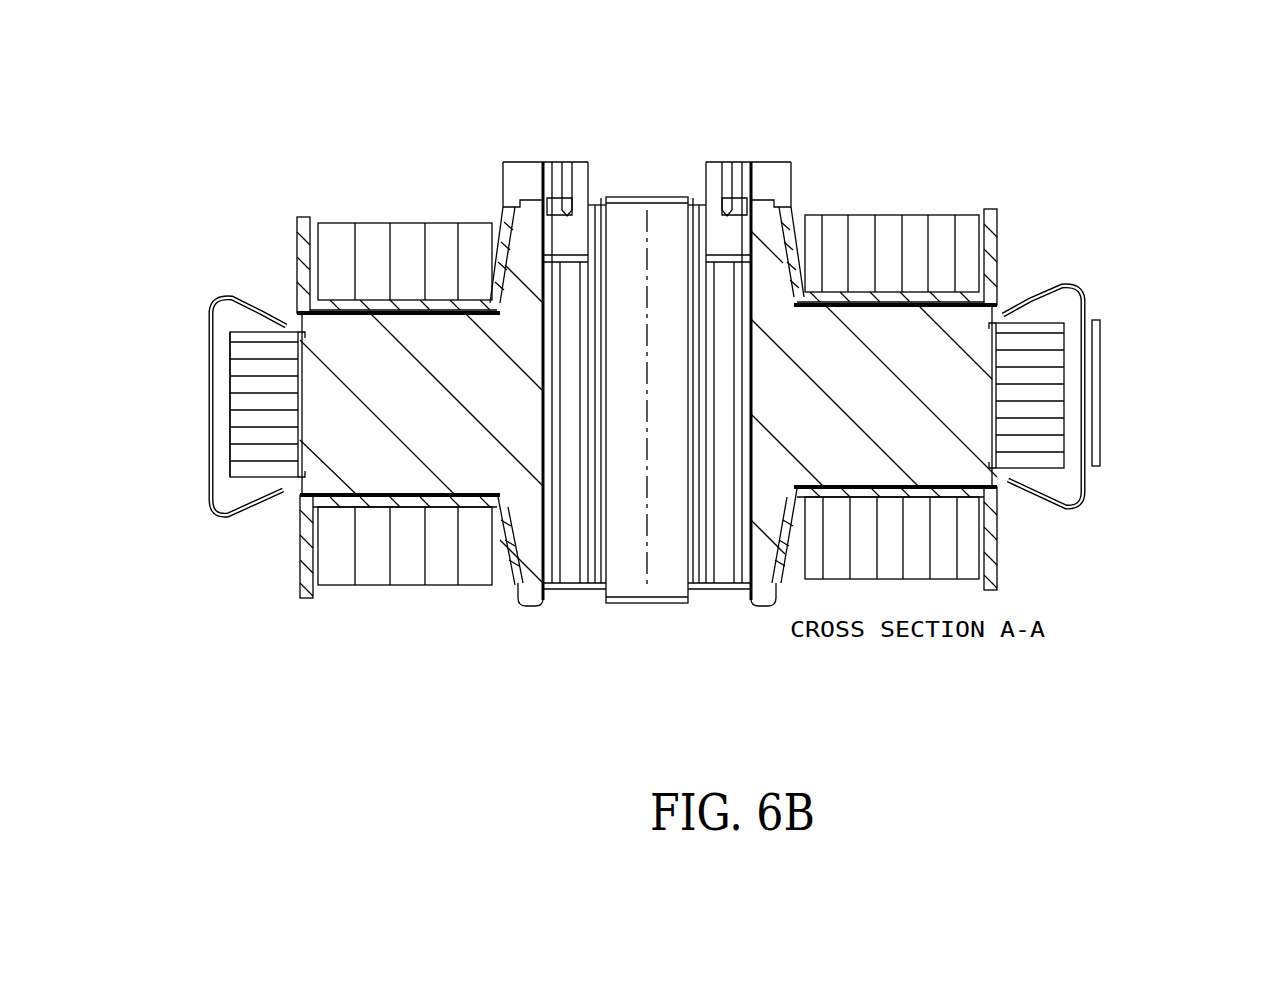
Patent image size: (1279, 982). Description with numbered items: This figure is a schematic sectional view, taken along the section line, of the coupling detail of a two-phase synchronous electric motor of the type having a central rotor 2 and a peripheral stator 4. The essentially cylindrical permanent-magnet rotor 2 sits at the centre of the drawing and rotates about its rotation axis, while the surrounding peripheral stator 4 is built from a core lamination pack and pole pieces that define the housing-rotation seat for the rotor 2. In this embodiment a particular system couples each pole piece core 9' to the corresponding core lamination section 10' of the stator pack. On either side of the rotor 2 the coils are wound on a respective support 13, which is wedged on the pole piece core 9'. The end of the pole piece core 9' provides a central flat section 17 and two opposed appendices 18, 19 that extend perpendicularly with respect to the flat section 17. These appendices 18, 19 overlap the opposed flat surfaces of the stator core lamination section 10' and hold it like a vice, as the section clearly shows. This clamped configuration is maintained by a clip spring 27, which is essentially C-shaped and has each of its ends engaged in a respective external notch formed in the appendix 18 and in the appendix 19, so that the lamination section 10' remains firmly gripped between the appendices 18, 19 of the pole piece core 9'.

The rotor 2 is at (636, 568).
The peripheral stator 4 is at (260, 358).
The pole piece core 9' is at (646, 351).
The core lamination section 10' is at (1094, 351).
The support 13 is at (445, 547).
The central flat section 17 is at (298, 392).
The appendix 18 is at (1000, 475).
The appendix 19 is at (1003, 307).
The clip spring 27 is at (208, 330).